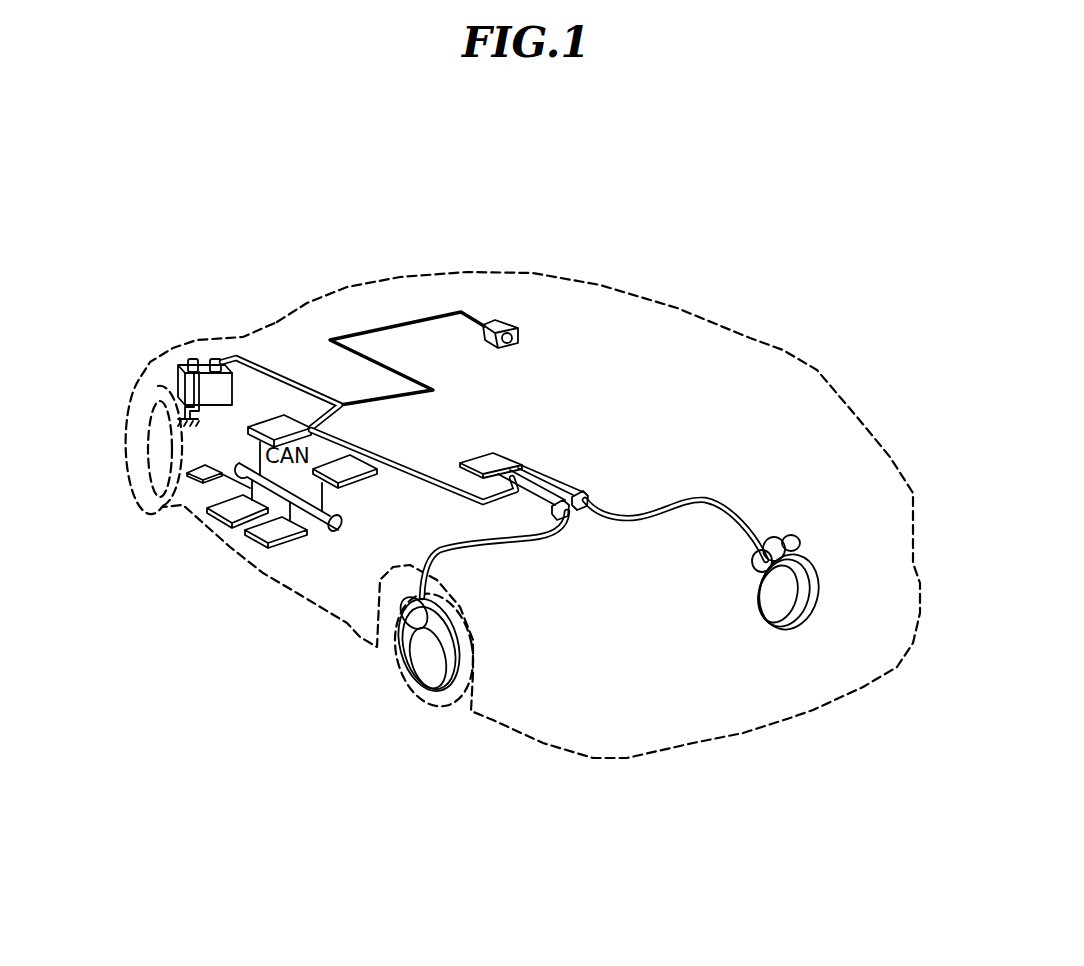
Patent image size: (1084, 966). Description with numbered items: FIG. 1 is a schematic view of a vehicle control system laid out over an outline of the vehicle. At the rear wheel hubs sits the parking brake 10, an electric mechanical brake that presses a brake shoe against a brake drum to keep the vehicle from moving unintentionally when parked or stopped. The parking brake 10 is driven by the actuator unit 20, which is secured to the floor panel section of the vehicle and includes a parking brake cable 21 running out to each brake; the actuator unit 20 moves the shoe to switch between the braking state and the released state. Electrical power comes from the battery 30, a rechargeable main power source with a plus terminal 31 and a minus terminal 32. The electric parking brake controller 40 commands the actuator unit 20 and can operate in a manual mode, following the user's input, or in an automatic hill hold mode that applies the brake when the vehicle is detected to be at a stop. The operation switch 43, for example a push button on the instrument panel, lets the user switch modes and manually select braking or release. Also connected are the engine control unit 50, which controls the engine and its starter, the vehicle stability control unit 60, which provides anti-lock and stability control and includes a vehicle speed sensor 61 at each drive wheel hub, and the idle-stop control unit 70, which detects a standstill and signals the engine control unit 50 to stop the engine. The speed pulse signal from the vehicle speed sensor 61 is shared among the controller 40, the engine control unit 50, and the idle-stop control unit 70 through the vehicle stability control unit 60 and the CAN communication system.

The parking brake 10 is at (777, 593).
The actuator unit 20 is at (495, 458).
The parking brake cable 21 is at (731, 506).
The battery 30 is at (178, 388).
The plus terminal 31 is at (216, 358).
The minus terminal 32 is at (193, 358).
The electric parking brake controller 40 is at (252, 436).
The operation switch 43 is at (508, 322).
The engine control unit 50 is at (364, 478).
The vehicle stability control unit 60 is at (220, 513).
The vehicle speed sensor 61 is at (195, 480).
The idle-stop control unit 70 is at (255, 536).